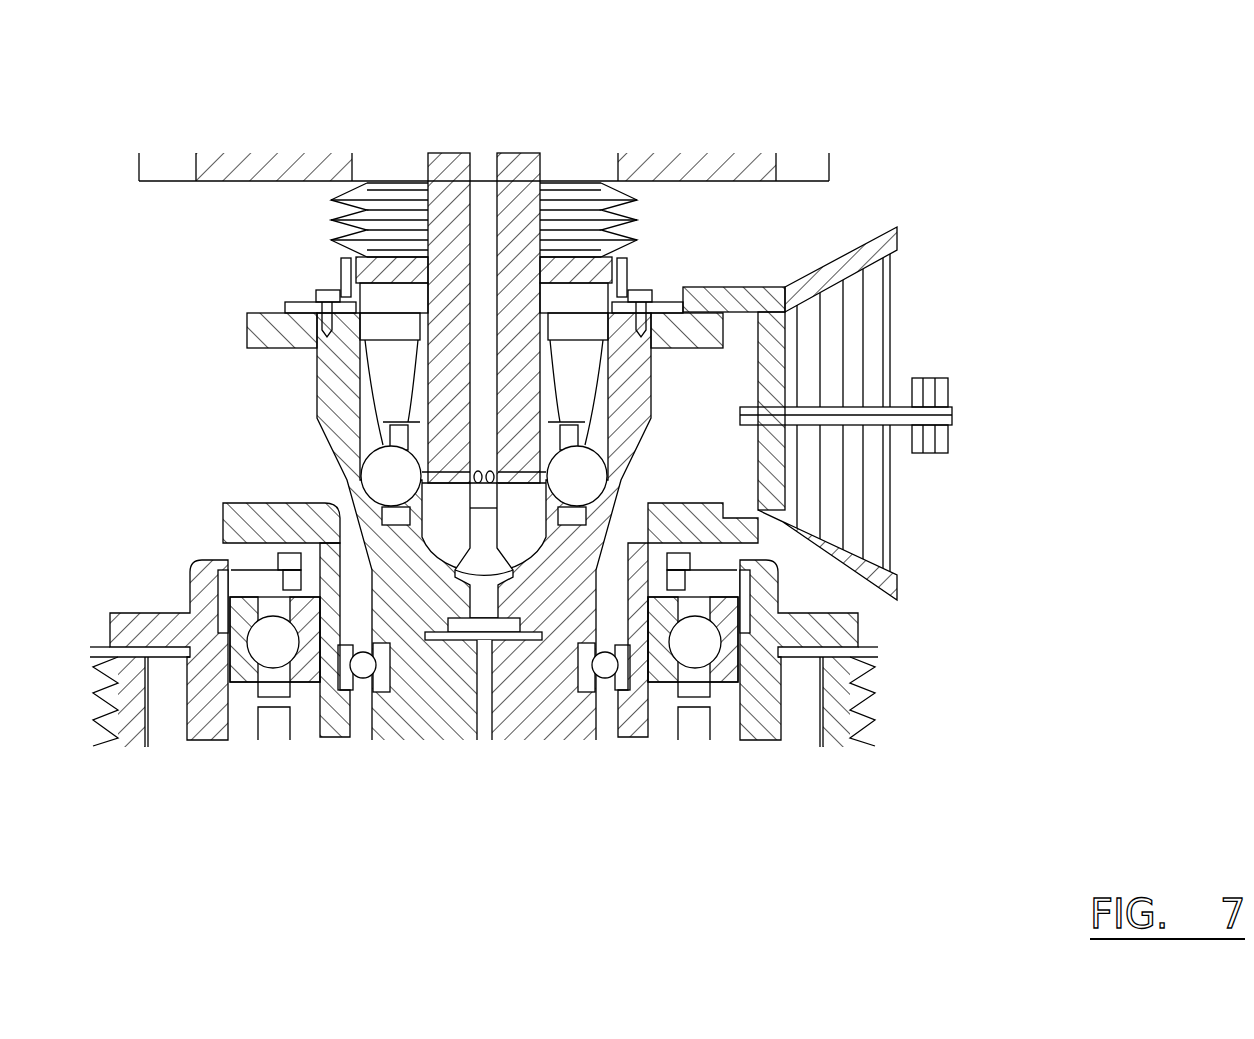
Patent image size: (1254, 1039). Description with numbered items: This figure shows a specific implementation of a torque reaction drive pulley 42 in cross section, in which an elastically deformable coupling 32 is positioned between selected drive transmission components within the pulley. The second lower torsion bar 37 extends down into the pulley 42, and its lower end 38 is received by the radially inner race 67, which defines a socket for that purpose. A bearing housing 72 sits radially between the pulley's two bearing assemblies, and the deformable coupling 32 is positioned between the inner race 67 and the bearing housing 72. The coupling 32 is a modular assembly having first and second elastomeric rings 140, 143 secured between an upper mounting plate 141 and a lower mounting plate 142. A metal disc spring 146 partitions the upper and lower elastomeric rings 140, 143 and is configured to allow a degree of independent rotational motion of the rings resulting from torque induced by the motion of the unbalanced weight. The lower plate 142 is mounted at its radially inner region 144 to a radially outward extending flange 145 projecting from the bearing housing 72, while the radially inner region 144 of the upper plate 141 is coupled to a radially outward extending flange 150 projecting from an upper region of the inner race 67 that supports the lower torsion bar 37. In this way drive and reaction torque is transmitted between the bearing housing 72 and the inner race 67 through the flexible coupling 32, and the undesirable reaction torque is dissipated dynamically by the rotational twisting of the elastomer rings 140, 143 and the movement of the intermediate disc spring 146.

The second lower torsion bar 37 is at (512, 187).
The second lower end 38 is at (420, 492).
The radially outward extending flange 150 is at (262, 328).
The radially outward extending flange 145 is at (680, 500).
The radially inner region 144 is at (737, 297).
The upper mounting plate 141 is at (852, 258).
The lower mounting plate 142 is at (873, 583).
The first elastomeric ring 140 is at (880, 284).
The second elastomeric ring 143 is at (893, 503).
The metal disc spring 146 is at (832, 388).
The deformable coupling 32 is at (928, 313).
The inner race 67 is at (435, 695).
The bearing housing 72 is at (632, 722).
The drive pulley 42 is at (870, 712).